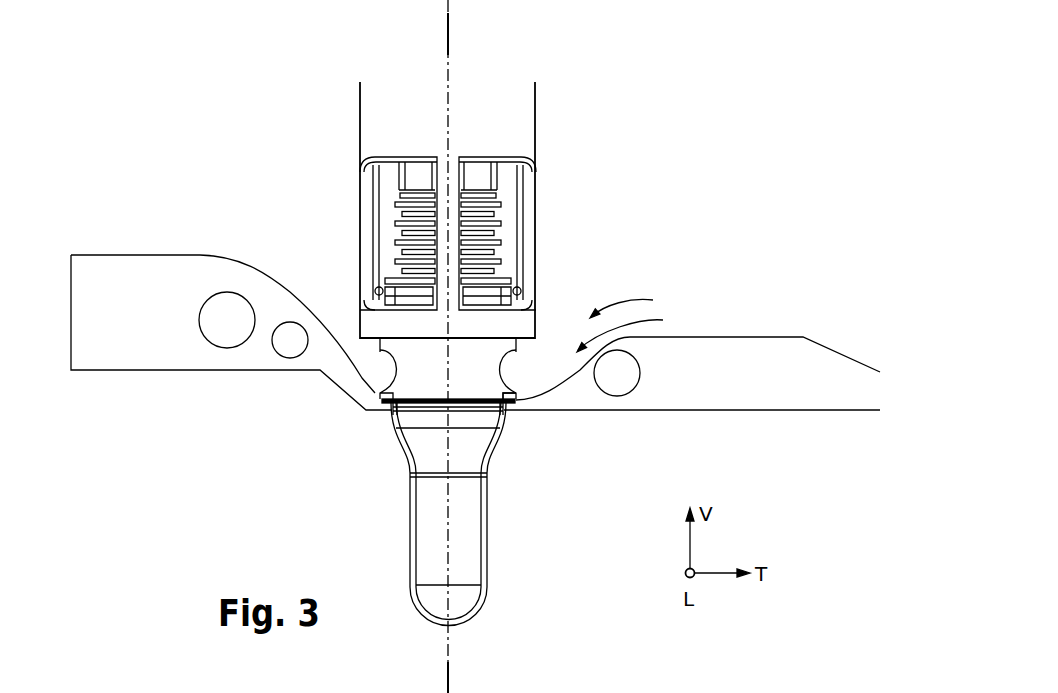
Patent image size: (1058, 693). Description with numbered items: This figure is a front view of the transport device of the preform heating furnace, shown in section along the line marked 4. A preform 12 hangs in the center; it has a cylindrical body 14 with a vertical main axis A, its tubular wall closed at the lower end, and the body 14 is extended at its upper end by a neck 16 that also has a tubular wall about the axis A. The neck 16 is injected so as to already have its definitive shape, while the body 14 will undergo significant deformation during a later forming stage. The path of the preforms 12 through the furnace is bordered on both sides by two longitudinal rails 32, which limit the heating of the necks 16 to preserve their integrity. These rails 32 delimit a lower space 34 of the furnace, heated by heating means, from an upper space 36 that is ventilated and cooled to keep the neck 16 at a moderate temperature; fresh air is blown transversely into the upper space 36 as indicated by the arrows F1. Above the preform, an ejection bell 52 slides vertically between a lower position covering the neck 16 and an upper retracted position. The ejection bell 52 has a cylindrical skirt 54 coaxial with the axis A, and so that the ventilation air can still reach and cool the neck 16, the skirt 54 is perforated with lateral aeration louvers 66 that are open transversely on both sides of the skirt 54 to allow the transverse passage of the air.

The preform 12 is at (508, 530).
The cylindrical body 14 is at (414, 548).
The neck 16 is at (520, 382).
The longitudinal rails 32 is at (200, 353).
The lower space 34 is at (581, 491).
The upper space 36 is at (629, 304).
The ejection bell 52 is at (425, 365).
The cylindrical skirt 54 is at (522, 308).
The lateral aeration louvers 66 is at (376, 374).
The section line 4 is at (452, 32).
The main axis A is at (447, 118).
The arrows F1 is at (651, 318).